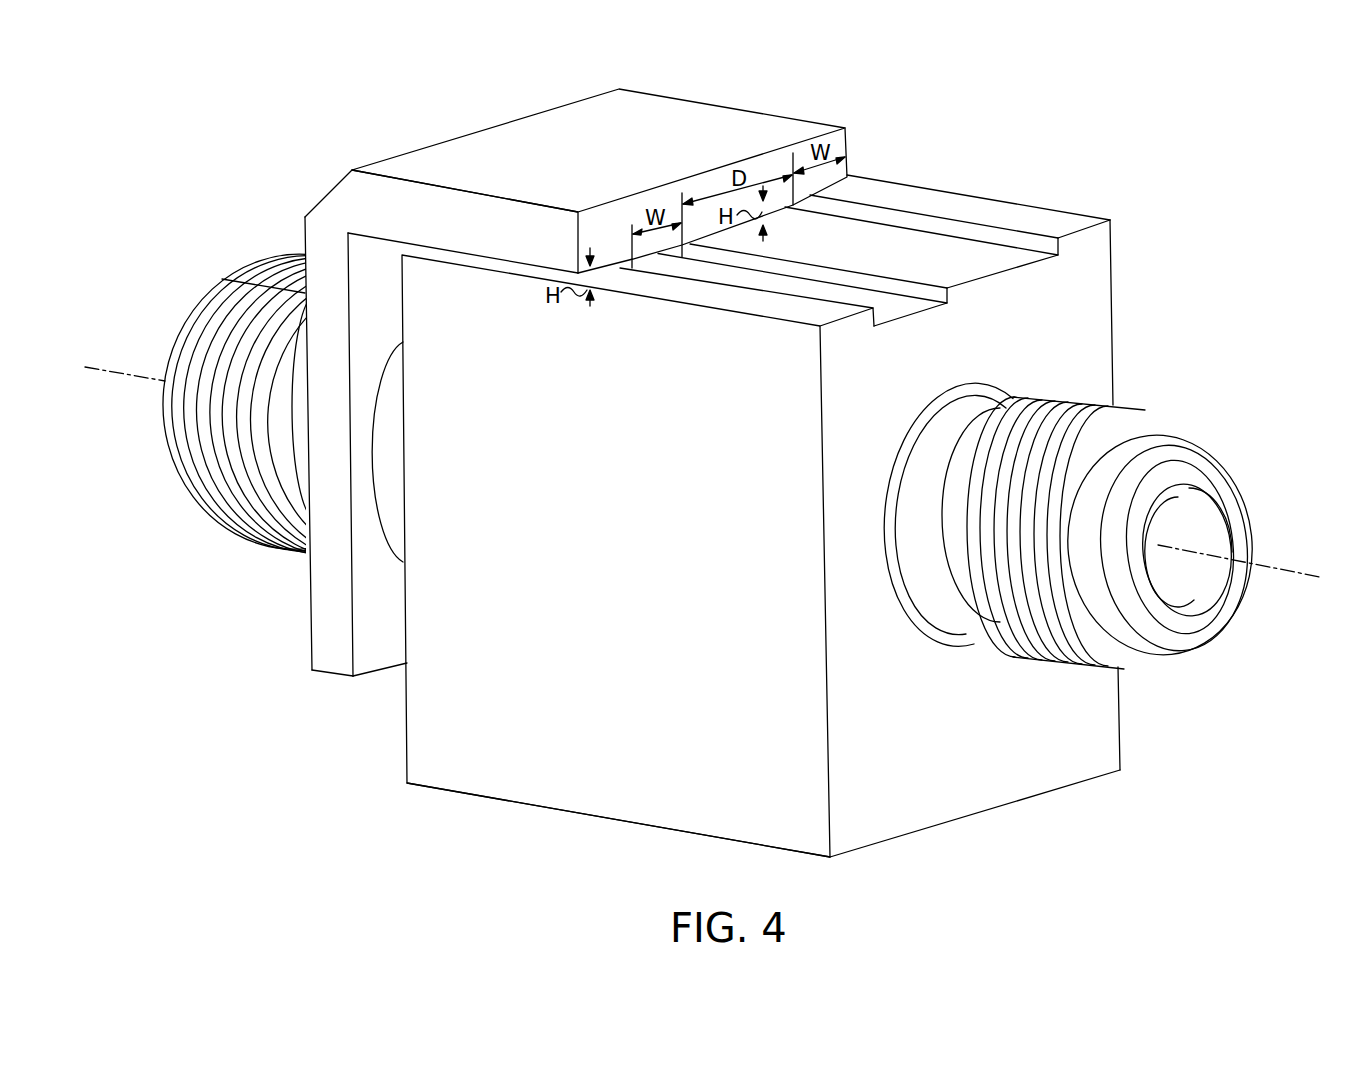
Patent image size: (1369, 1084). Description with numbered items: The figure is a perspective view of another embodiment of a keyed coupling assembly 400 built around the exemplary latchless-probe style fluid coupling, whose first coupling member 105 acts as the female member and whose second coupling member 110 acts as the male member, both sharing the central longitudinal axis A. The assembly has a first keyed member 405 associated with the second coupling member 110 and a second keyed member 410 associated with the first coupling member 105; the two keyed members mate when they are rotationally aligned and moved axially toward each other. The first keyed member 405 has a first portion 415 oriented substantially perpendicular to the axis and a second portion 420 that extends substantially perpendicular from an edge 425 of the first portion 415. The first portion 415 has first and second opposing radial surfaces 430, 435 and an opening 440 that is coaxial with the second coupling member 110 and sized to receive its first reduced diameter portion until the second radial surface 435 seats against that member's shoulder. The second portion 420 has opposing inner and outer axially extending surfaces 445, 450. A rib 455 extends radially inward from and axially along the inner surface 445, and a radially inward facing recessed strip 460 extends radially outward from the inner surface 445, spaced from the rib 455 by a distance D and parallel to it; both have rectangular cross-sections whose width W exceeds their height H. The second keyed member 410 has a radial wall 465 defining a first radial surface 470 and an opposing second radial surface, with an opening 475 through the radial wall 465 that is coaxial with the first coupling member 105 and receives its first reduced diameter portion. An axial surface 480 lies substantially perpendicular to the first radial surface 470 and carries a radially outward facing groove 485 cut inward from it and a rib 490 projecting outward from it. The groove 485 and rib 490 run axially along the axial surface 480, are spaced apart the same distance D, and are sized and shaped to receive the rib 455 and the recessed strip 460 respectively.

The keyed coupling assembly 400 is at (1155, 136).
The first keyed member 405 is at (389, 140).
The second keyed member 410 is at (647, 848).
The first portion 415 is at (324, 686).
The second portion 420 is at (462, 212).
The edge 425 is at (298, 206).
The first radial surface 430 is at (307, 625).
The second radial surface 435 is at (372, 647).
The opening 440 is at (388, 543).
The inner surface 445 is at (475, 262).
The outer surface 450 is at (626, 160).
The rib 455 is at (656, 258).
The recessed strip 460 is at (852, 178).
The radial wall 465 is at (905, 815).
The first radial surface 470 is at (1045, 770).
The opening 475 is at (1018, 385).
The axial surface 480 is at (978, 258).
The groove 485 is at (888, 300).
The rib 490 is at (1058, 220).
The first coupling member 105 is at (1164, 395).
The second coupling member 110 is at (216, 560).